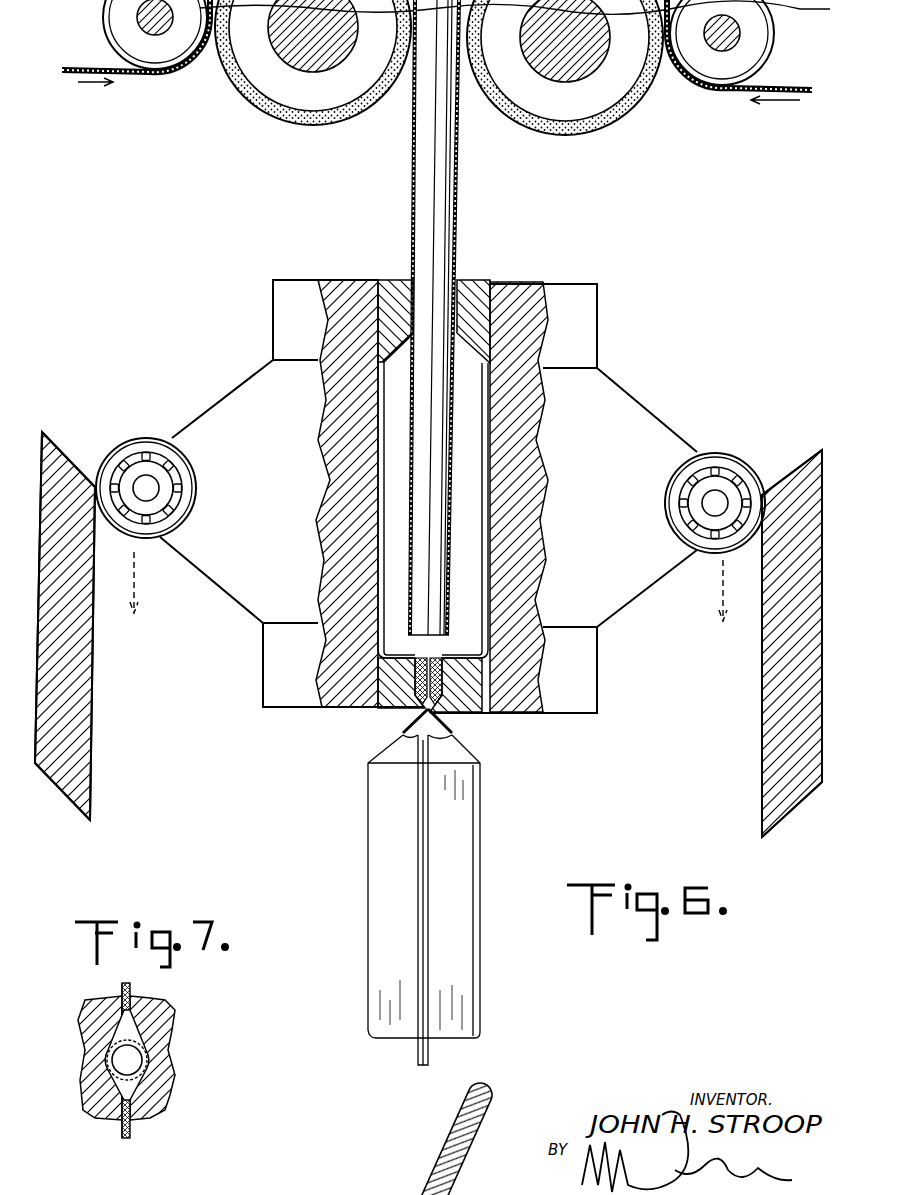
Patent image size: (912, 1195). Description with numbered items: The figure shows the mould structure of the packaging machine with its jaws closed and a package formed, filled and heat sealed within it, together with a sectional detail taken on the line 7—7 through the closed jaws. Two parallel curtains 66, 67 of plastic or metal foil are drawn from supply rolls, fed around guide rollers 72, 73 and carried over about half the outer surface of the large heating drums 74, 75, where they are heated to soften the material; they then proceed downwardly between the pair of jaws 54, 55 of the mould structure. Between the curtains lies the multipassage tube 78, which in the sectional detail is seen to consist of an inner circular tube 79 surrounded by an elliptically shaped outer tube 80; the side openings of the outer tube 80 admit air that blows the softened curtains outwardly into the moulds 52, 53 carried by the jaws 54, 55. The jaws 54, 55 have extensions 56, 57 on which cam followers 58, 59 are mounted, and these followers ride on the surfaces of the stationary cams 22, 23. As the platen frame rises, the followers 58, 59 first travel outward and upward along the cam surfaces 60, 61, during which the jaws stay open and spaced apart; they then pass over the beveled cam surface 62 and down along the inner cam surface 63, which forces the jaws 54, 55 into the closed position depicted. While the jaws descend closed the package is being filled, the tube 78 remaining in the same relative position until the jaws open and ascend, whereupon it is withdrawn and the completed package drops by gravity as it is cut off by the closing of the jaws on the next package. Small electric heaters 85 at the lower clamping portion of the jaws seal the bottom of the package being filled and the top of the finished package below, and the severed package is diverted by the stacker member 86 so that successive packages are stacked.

In FIG. 6, the guide roller 73 is at (158, 52).
In FIG. 6, the large heating drum 75 is at (288, 125).
In FIG. 6, the large heating drum 74 is at (592, 133).
In FIG. 6, the guide roller 72 is at (705, 90).
In FIG. 6, the curtain 67 is at (412, 172).
In FIG. 7, the curtain 67 is at (118, 1128).
In FIG. 6, the curtain 66 is at (462, 173).
In FIG. 7, the curtain 66 is at (135, 1128).
In FIG. 6, the multipassage tube 78 is at (445, 214).
In FIG. 6, the section line 7- 7 is at (401, 275).
In FIG. 6, the jaw 55 is at (337, 288).
In FIG. 7, the jaw 55 is at (98, 1018).
In FIG. 6, the jaw 54 is at (530, 292).
In FIG. 7, the jaw 54 is at (148, 1010).
In FIG. 6, the extension 57 is at (245, 387).
In FIG. 6, the extension 56 is at (640, 573).
In FIG. 6, the cam follower 59 is at (153, 440).
In FIG. 6, the cam follower 58 is at (720, 453).
In FIG. 6, the beveled cam surface 62 is at (70, 460).
In FIG. 6, the outer cam surface 61 is at (40, 590).
In FIG. 6, the inner cam surface 63 is at (92, 673).
In FIG. 6, the beveled cam surface 60 is at (62, 795).
In FIG. 6, the stationary cam 23 is at (75, 712).
In FIG. 6, the stationary cam 22 is at (775, 735).
In FIG. 6, the mould 53 is at (380, 520).
In FIG. 6, the mould 52 is at (486, 520).
In FIG. 6, the electric heater 85 is at (448, 690).
In FIG. 6, the stacker member 86 is at (487, 1087).
In FIG. 7, the outer tube 80 is at (140, 1042).
In FIG. 7, the inner circular tube 79 is at (148, 1060).